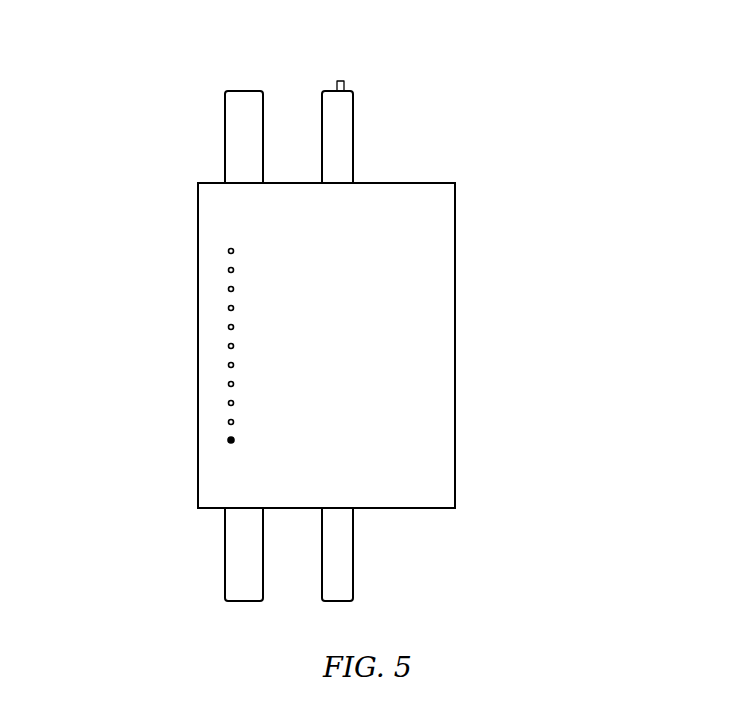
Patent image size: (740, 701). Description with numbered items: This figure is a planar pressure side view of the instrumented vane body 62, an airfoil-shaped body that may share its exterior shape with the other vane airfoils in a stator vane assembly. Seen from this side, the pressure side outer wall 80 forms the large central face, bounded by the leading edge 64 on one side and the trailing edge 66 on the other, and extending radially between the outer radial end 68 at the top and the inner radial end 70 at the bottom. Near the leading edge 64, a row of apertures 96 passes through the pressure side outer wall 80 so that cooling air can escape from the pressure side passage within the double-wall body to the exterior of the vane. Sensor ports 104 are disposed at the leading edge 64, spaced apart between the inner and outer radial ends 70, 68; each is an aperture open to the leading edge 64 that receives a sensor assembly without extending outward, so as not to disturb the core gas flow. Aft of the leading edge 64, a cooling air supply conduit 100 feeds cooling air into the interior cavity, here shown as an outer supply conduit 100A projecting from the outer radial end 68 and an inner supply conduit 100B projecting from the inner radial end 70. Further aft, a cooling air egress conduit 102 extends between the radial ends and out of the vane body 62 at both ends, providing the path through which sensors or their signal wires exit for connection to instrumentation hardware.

The instrumented vane body 62 is at (603, 200).
The pressure side outer wall 80 is at (417, 410).
The outer radial end 68 is at (403, 157).
The inner radial end 70 is at (398, 533).
The trailing edge 66 is at (455, 490).
The leading edge 64 is at (198, 344).
The sensor ports 104 is at (198, 236).
The apertures 96 is at (231, 440).
The cooling air egress conduit 102 is at (365, 105).
The cooling air supply conduit 100 is at (157, 353).
The outer supply conduit 100A is at (213, 123).
The inner supply conduit 100B is at (215, 583).